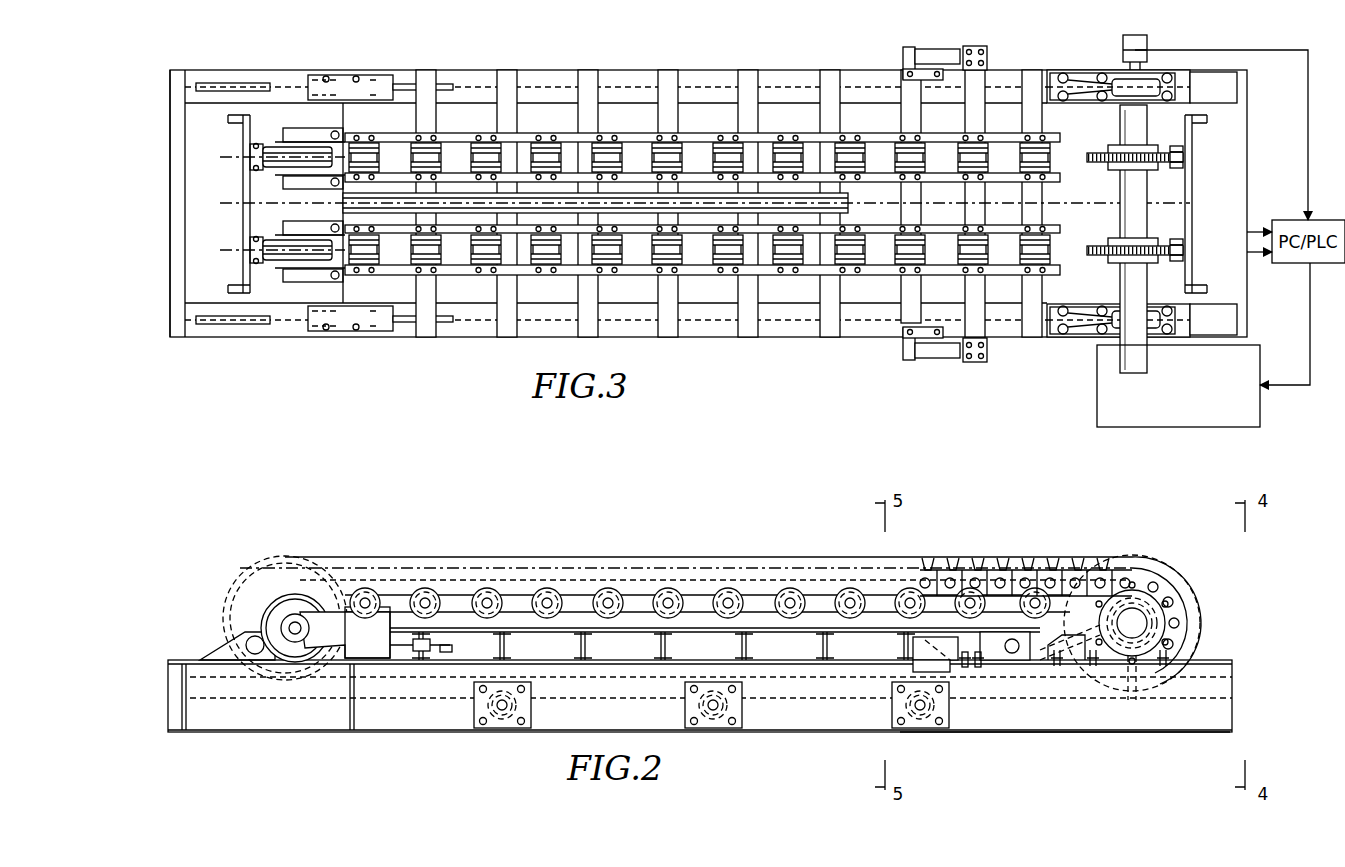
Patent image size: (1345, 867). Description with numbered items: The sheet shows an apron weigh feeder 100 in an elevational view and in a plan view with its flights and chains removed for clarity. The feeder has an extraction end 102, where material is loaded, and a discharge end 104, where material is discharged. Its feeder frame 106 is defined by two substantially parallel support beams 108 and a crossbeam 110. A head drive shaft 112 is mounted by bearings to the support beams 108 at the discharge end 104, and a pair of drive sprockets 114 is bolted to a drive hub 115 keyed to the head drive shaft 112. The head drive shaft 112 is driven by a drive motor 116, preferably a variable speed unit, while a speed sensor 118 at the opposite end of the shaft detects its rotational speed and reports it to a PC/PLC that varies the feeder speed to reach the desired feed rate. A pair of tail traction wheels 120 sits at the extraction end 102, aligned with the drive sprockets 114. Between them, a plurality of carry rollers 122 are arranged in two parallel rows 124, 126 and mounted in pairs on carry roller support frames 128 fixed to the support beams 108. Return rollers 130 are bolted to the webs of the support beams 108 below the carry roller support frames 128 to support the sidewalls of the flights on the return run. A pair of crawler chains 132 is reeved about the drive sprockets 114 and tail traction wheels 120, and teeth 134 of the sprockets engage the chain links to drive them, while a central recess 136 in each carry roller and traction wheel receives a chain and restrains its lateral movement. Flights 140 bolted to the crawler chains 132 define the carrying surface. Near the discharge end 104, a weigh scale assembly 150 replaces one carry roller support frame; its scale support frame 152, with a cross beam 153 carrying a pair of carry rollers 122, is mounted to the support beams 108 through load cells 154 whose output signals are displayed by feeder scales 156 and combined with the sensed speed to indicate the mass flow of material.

In FIG. 3, the apron weigh feeder 100 is at (668, 48).
In FIG. 2, the apron weigh feeder 100 is at (372, 520).
In FIG. 3, the extraction end 102 is at (222, 57).
In FIG. 2, the extraction end 102 is at (308, 545).
In FIG. 3, the discharge end 104 is at (1128, 30).
In FIG. 2, the discharge end 104 is at (1030, 545).
In FIG. 3, the feeder frame 106 is at (420, 338).
In FIG. 2, the feeder frame 106 is at (428, 735).
In FIG. 3, the support beams 108 is at (196, 70).
In FIG. 3, the crossbeam 110 is at (165, 180).
In FIG. 3, the head drive shaft 112 is at (1127, 128).
In FIG. 2, the head drive shaft 112 is at (1150, 655).
In FIG. 3, the drive sprockets 114 is at (1160, 163).
In FIG. 2, the drive sprockets 114 is at (1200, 640).
In FIG. 3, the drive hub 115 is at (1115, 165).
In FIG. 3, the drive motor 116 is at (1097, 370).
In FIG. 3, the speed sensor 118 is at (1140, 33).
In FIG. 3, the tail traction wheels 120 is at (270, 152).
In FIG. 2, the tail traction wheels 120 is at (265, 598).
In FIG. 3, the carry rollers 122 is at (568, 265).
In FIG. 2, the carry rollers 122 is at (547, 590).
In FIG. 3, the first row of carry rollers 124 is at (692, 130).
In FIG. 3, the second row of carry rollers 126 is at (705, 283).
In FIG. 3, the carry roller support frames 128 is at (508, 70).
In FIG. 2, the carry roller support frames 128 is at (740, 655).
In FIG. 2, the return rollers 130 is at (530, 708).
In FIG. 2, the crawler chains 132 is at (935, 580).
In FIG. 2, the teeth 134 is at (1085, 598).
In FIG. 3, the central recess 136 is at (1053, 177).
In FIG. 3, the flights 140 is at (243, 148).
In FIG. 2, the flights 140 is at (1135, 600).
In FIG. 3, the weigh scale assembly 150 is at (928, 50).
In FIG. 2, the weigh scale assembly 150 is at (1020, 742).
In FIG. 3, the scale support frame 152 is at (985, 50).
In FIG. 2, the scale support frame 152 is at (990, 645).
In FIG. 3, the cross beam 153 is at (970, 284).
In FIG. 2, the load cells 154 is at (975, 667).
In FIG. 3, the feeder scales 156 is at (920, 57).
In FIG. 2, the feeder scales 156 is at (913, 652).